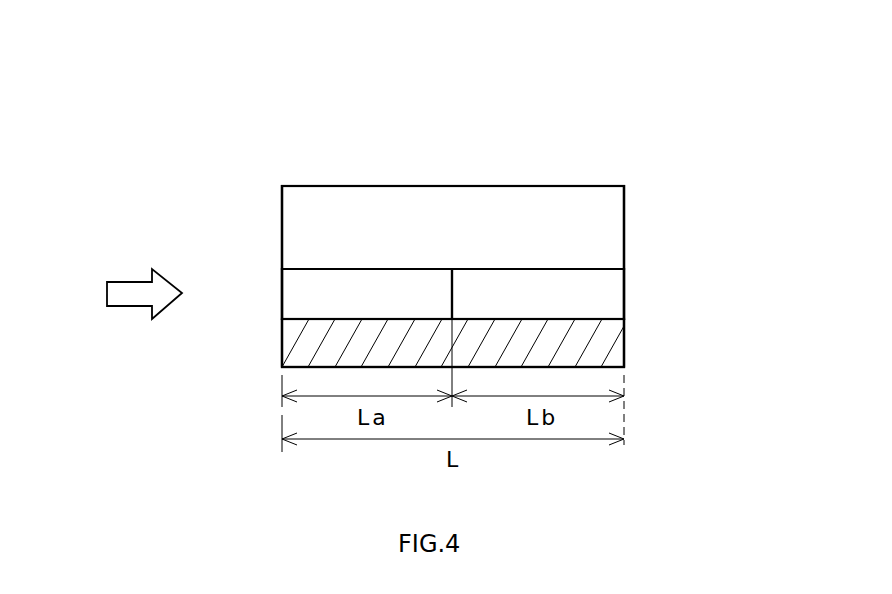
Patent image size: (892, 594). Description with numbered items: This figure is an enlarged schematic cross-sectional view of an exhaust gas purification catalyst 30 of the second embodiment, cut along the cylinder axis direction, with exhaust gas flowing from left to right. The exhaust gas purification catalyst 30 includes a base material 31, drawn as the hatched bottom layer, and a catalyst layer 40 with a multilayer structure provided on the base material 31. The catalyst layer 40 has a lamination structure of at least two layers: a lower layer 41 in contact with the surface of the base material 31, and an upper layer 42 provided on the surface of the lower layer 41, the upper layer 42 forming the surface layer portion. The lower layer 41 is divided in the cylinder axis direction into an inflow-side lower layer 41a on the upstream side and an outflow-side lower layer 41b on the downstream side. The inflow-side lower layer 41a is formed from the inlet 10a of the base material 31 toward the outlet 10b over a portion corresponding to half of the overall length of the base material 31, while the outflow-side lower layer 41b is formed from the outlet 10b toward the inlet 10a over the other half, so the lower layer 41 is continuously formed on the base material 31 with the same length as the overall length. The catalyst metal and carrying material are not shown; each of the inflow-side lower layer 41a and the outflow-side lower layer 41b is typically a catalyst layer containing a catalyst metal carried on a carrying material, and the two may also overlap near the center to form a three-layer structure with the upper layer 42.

The exhaust gas purification catalyst 30 is at (683, 113).
The catalyst layer 40 is at (441, 187).
The upper layer 42 is at (604, 228).
The lower layer 41 is at (626, 280).
The inflow-side lower layer 41a is at (360, 280).
The outflow-side lower layer 41b is at (525, 280).
The base material 31 is at (607, 346).
The inlet 10a is at (281, 332).
The outlet 10b is at (625, 328).